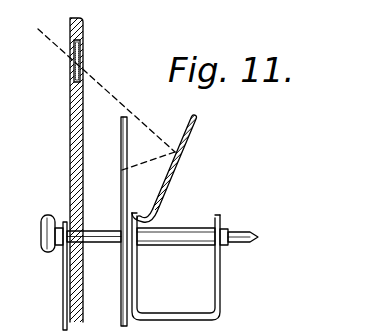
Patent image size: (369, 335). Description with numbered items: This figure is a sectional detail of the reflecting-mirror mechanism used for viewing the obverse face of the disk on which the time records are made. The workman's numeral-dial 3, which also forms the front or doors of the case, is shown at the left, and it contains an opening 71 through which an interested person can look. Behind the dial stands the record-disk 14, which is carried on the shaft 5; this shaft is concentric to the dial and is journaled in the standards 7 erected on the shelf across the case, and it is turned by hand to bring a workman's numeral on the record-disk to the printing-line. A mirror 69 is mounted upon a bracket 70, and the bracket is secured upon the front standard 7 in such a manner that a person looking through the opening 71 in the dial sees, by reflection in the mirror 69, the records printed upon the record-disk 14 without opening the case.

The workman's numeral-dial 3 is at (66, 170).
The opening 71 is at (74, 60).
The record-disk 14 is at (112, 221).
The shaft 5 is at (158, 232).
The standards 7 is at (186, 266).
The mirror 69 is at (185, 162).
The bracket 70 is at (160, 208).